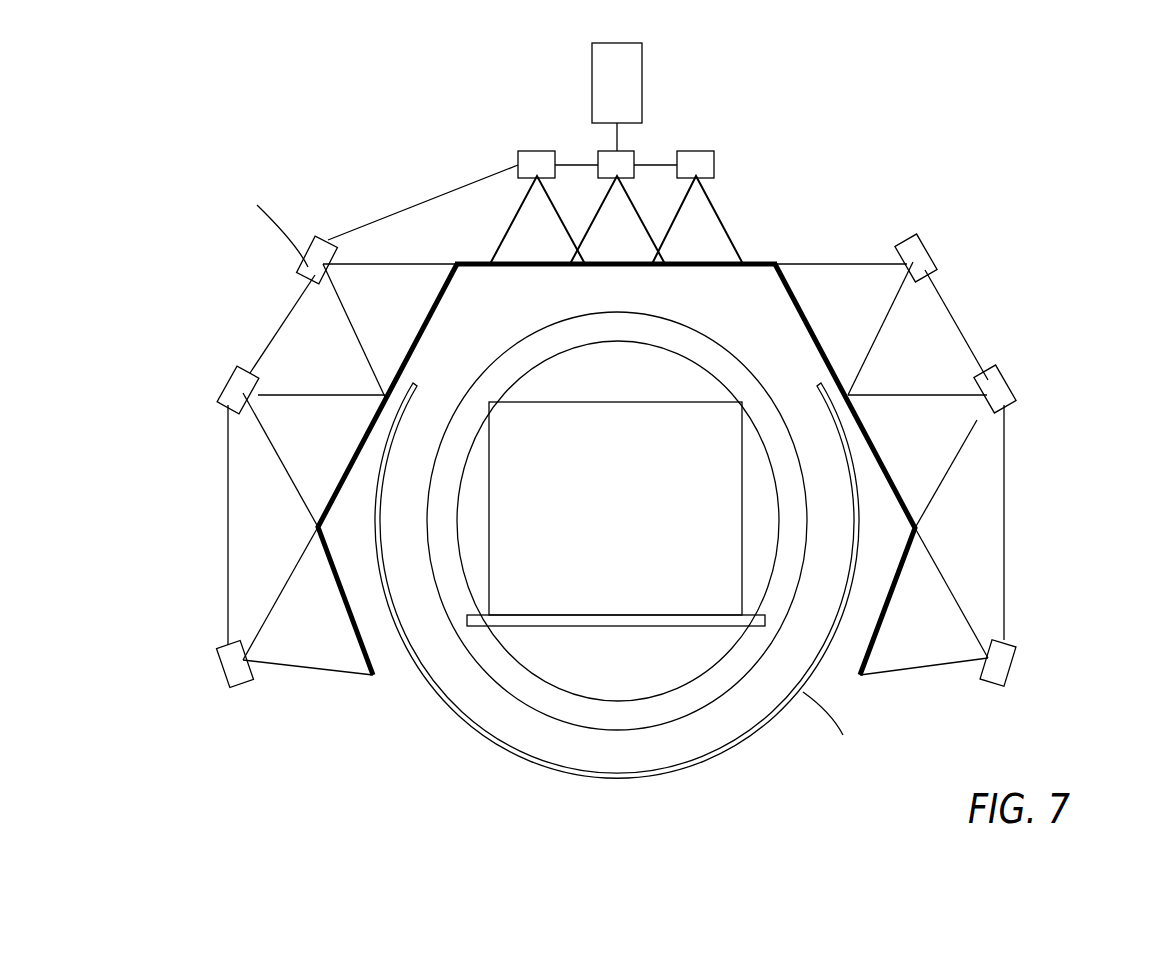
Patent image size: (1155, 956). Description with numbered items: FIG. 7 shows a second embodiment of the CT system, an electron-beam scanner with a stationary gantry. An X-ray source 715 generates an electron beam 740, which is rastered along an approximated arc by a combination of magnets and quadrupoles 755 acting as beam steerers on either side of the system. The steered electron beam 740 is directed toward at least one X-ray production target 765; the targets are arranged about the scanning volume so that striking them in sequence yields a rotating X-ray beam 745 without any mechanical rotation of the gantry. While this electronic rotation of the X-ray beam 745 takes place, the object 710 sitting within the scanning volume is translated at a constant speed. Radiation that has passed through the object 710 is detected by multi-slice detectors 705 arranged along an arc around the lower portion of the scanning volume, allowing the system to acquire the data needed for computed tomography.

The multi-slice detectors 705 is at (522, 760).
The object 710 is at (694, 410).
The X-ray source 715 is at (632, 88).
The electron beam 740 is at (275, 453).
The rotating X-ray beam 745 is at (447, 278).
The magnets and quadrupoles 755 is at (998, 365).
The X-ray production target 765 is at (768, 260).